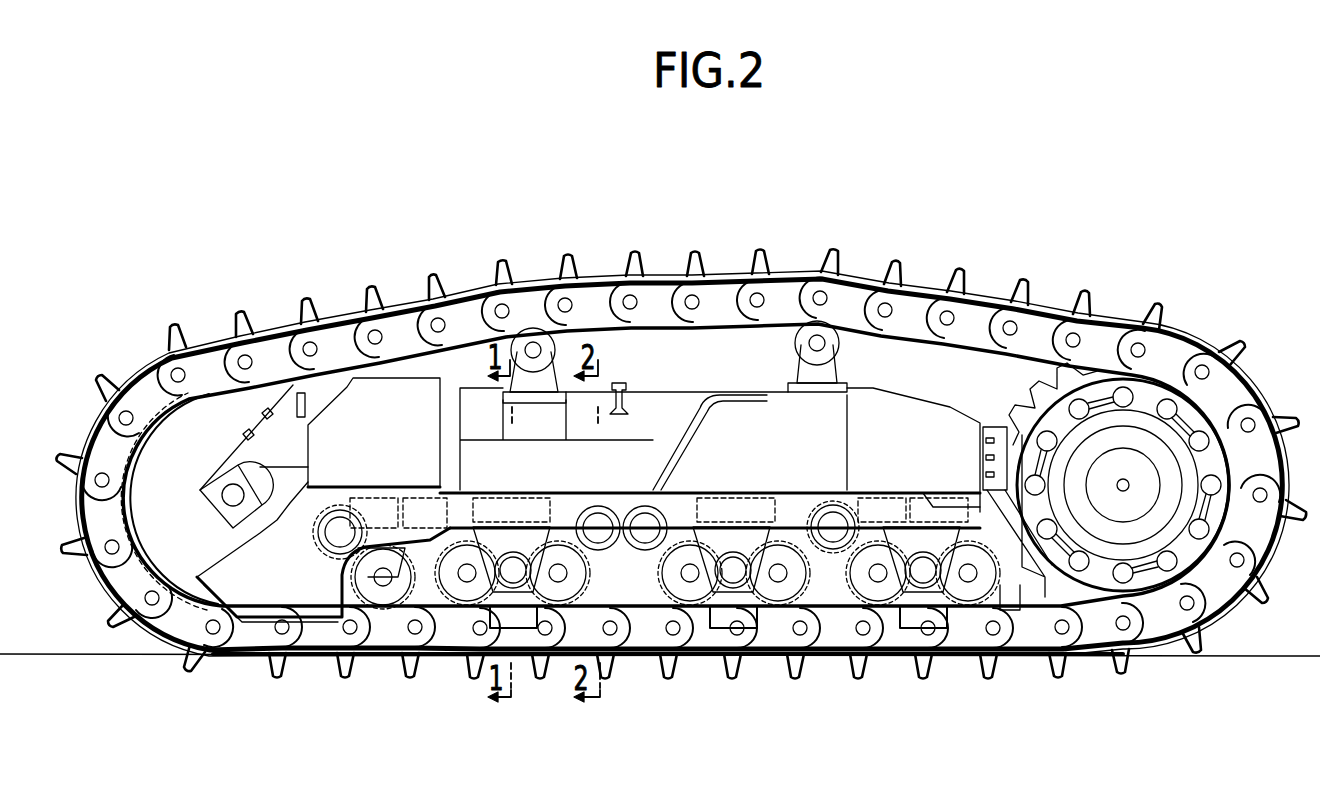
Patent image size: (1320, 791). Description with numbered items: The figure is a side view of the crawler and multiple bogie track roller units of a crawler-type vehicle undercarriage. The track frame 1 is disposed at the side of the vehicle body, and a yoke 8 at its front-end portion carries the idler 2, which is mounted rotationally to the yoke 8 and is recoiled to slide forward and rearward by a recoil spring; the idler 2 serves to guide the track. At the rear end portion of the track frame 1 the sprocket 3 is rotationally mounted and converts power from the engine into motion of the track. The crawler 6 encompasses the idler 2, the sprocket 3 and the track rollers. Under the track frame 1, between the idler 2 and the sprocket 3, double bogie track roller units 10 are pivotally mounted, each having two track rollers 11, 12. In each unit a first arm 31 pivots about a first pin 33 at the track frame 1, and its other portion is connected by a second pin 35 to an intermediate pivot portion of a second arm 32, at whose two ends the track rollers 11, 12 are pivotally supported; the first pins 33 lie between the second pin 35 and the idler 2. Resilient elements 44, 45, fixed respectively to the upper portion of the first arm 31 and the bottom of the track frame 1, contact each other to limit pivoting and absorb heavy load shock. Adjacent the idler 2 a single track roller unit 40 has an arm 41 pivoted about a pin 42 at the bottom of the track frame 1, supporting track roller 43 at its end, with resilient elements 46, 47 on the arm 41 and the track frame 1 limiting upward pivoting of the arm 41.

The track frame 1 is at (657, 403).
The idler 2 is at (168, 450).
The sprocket 3 is at (1105, 392).
The crawler 6 is at (530, 312).
The yoke 8 is at (287, 423).
The multiple track roller bogie unit 10 is at (625, 697).
The track roller 11 is at (870, 592).
The track roller 12 is at (970, 603).
The first arm 31 is at (900, 545).
The second arm 32 is at (1012, 608).
The first pin 33 is at (836, 545).
The second pin 35 is at (926, 590).
The single track roller unit 40 is at (455, 717).
The arm 41 is at (412, 560).
The pin 42 is at (336, 540).
The track roller 43 is at (383, 606).
The resilient element 44 is at (880, 495).
The resilient element 45 is at (952, 497).
The resilient element 46 is at (367, 508).
The resilient element 47 is at (433, 508).